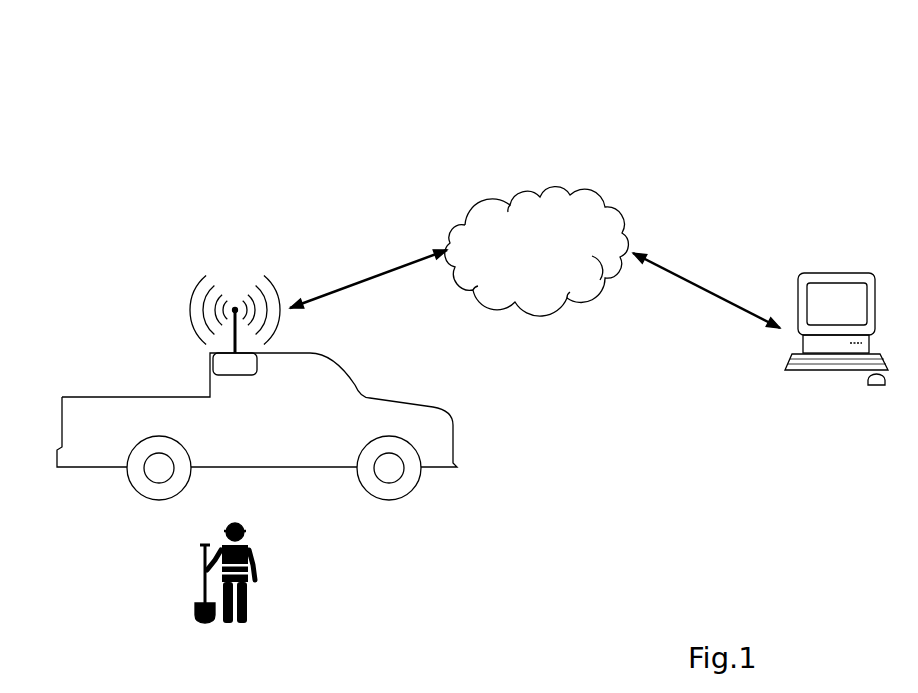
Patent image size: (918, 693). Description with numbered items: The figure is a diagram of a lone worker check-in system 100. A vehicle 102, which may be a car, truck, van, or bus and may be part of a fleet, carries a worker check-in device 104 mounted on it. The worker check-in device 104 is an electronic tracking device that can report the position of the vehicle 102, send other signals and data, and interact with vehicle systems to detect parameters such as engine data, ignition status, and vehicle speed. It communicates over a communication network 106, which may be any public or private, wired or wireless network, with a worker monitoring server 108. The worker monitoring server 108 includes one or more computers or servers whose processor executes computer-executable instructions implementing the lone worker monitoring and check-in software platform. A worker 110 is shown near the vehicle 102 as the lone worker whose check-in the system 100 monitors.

The lone worker check-in system 100 is at (767, 80).
The vehicle 102 is at (95, 398).
The worker check-in device 104 is at (212, 367).
The communication network 106 is at (573, 182).
The worker monitoring server 108 is at (842, 272).
The worker 110 is at (262, 568).